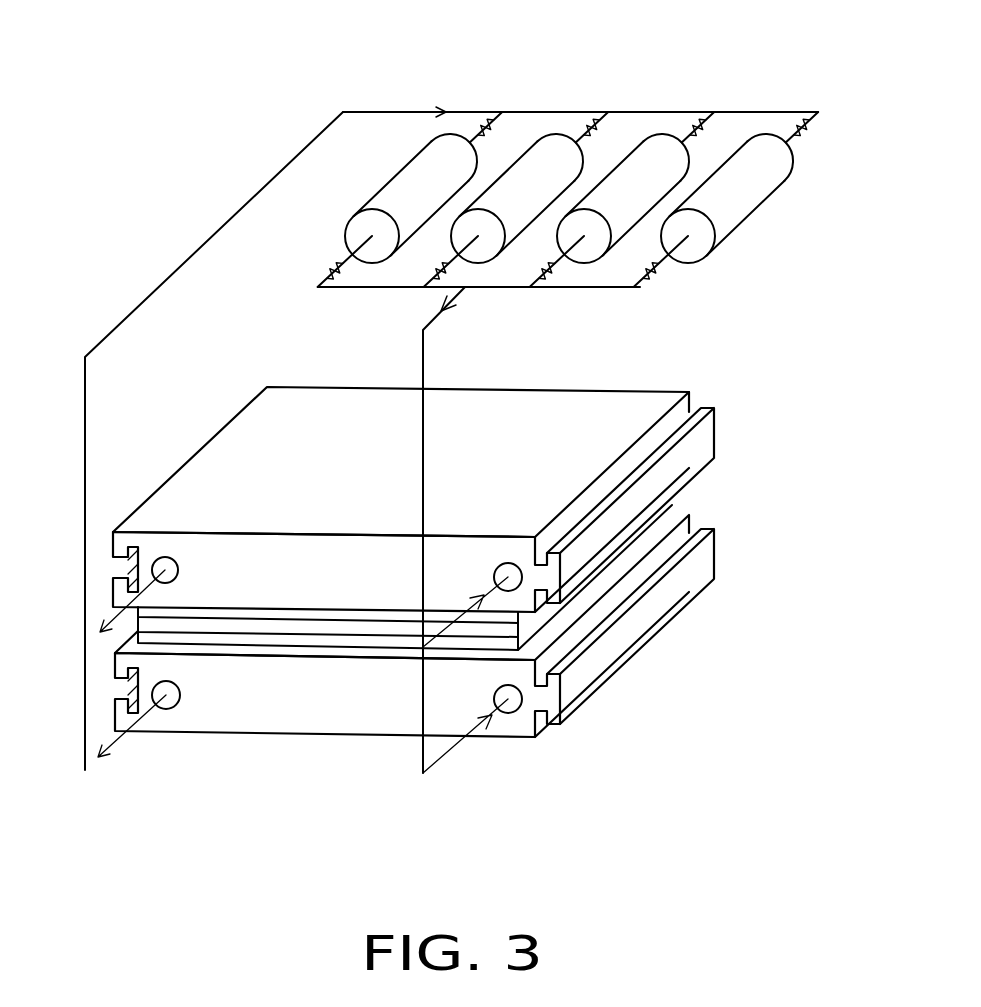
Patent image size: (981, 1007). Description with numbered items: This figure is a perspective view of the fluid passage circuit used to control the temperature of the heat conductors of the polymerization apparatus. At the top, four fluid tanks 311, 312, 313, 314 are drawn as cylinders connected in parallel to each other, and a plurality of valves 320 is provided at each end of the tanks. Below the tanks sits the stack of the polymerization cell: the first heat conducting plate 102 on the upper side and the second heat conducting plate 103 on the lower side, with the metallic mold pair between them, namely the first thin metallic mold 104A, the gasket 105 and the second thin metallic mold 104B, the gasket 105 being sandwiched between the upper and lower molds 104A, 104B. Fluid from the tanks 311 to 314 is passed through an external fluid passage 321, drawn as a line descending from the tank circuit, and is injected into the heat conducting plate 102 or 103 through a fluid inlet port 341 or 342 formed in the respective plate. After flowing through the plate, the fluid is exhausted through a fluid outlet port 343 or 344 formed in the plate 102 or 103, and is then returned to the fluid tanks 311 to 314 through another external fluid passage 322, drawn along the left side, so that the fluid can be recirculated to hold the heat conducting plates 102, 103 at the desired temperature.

The first heat conducting plate 102 is at (585, 415).
The second heat conducting plate 103 is at (532, 747).
The first thin metallic mold 104A is at (337, 620).
The second thin metallic mold 104B is at (367, 650).
The gasket 105 is at (260, 632).
The fluid tank 311 is at (433, 168).
The fluid tank 312 is at (557, 160).
The fluid tank 313 is at (660, 160).
The fluid tank 314 is at (760, 165).
The valve 320 is at (655, 285).
The external fluid passage 321 is at (422, 458).
The external fluid passage 322 is at (83, 390).
The fluid inlet port 341 is at (505, 563).
The fluid inlet port 342 is at (505, 716).
The fluid outlet port 343 is at (158, 565).
The fluid outlet port 344 is at (170, 710).